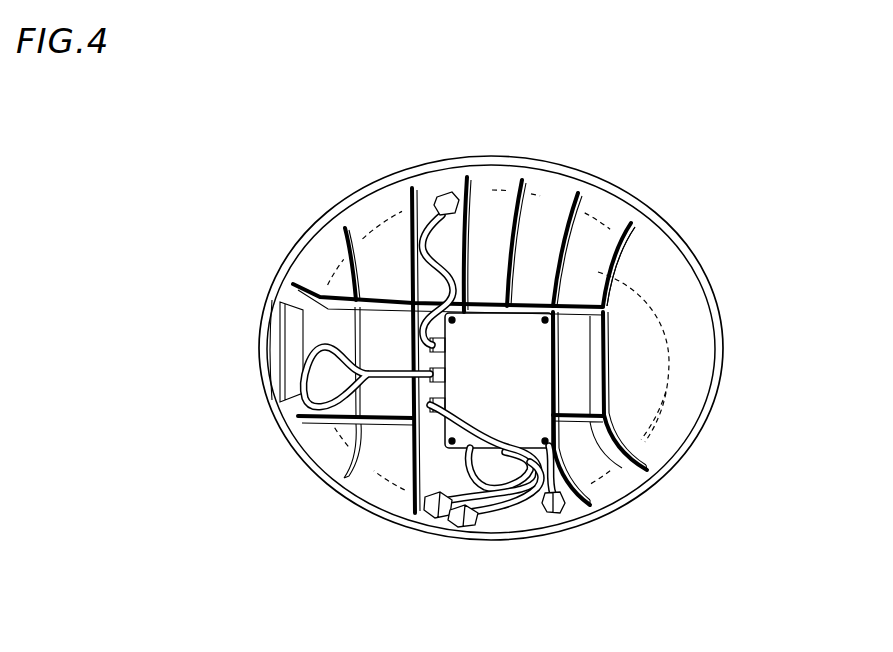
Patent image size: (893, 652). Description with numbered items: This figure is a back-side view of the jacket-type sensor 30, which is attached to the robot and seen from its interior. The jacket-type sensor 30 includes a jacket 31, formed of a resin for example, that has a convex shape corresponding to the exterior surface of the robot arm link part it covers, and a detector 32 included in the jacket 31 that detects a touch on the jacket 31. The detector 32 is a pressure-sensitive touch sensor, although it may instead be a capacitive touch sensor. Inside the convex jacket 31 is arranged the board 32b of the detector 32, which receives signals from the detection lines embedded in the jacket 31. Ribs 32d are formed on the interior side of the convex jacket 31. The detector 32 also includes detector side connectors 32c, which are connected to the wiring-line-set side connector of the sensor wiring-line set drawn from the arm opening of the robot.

The jacket-type sensor 30 is at (236, 139).
The jacket 31 is at (414, 168).
The detector 32 is at (531, 349).
The board 32b is at (538, 372).
The detector side connector 32c is at (452, 190).
The ribs 32d is at (620, 268).